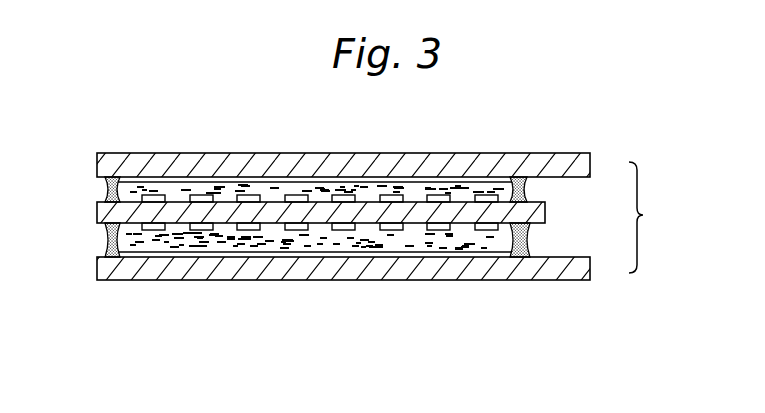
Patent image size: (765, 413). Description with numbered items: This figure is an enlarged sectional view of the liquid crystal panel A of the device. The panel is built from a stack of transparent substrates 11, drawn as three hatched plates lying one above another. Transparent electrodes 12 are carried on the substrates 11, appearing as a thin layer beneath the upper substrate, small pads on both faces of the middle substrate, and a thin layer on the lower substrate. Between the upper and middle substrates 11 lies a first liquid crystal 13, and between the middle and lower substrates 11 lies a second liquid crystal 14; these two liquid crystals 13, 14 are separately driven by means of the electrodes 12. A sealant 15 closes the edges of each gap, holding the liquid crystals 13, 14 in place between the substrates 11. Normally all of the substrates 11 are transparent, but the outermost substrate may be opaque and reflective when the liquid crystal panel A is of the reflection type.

The transparent substrate 11 is at (97, 159).
The transparent electrode 12 is at (528, 190).
The first liquid crystal 13 is at (458, 188).
The second liquid crystal 14 is at (434, 244).
The sealant 15 is at (533, 240).
The liquid crystal panel A is at (648, 217).